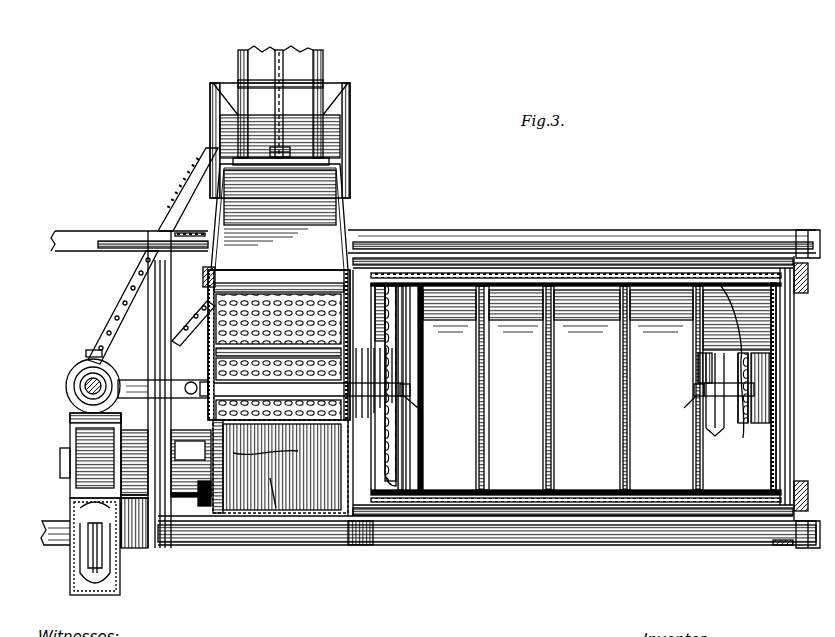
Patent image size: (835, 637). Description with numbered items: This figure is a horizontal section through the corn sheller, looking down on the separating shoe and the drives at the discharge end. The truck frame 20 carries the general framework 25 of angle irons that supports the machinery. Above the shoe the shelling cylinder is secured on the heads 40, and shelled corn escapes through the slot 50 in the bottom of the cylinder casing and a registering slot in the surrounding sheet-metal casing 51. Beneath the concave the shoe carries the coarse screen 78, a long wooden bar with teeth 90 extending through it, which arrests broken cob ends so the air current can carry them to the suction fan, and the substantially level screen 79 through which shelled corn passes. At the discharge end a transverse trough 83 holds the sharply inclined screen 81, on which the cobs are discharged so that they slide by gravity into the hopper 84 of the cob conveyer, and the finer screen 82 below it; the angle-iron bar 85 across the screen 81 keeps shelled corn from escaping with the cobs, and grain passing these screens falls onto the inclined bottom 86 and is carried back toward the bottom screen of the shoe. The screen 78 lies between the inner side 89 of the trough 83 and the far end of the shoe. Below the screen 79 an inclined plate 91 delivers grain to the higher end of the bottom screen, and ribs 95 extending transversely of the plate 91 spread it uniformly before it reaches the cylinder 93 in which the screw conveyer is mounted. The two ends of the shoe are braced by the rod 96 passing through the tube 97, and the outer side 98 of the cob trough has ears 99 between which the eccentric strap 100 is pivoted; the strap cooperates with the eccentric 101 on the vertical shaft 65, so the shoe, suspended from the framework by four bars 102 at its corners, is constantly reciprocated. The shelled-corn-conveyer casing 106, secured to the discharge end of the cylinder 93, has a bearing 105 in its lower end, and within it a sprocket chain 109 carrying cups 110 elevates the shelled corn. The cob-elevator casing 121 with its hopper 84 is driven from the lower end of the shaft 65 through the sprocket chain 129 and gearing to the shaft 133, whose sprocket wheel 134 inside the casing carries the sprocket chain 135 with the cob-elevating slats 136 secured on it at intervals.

The truck frame 20 is at (505, 236).
The general framework 25 is at (170, 224).
The heads 40 is at (700, 424).
The slot 50 is at (362, 338).
The sheet-metal casing 51 is at (747, 292).
The vertical shaft 65 is at (80, 372).
The screen 78 is at (398, 390).
The screen 79 is at (388, 452).
The screen 81 is at (262, 300).
The screen 82 is at (205, 340).
The transverse trough 83 is at (310, 190).
The hopper 84 is at (334, 100).
The bar 85 is at (300, 280).
The inclined bottom 86 is at (268, 500).
The inner side 89 is at (338, 472).
The teeth 90 is at (375, 370).
The inclined plate 91 is at (580, 470).
The cylinder 93 is at (192, 490).
The ribs 95 is at (540, 384).
The rod 96 is at (402, 380).
The tube 97 is at (292, 443).
The outer side 98 is at (205, 408).
The ears 99 is at (182, 373).
The eccentric strap 100 is at (130, 372).
The eccentric 101 is at (72, 384).
The bars 102 is at (207, 268).
The bearing 105 is at (56, 445).
The shelled-corn-conveyer casing 106 is at (112, 548).
The sprocket chain 109 is at (100, 558).
The cups 110 is at (66, 505).
The cob-elevator casing 121 is at (315, 54).
The sprocket chain 129 is at (118, 290).
The shaft 133 is at (300, 150).
The sprocket wheel 134 is at (282, 142).
The sprocket chain 135 is at (278, 92).
The cob-elevating slats 136 is at (250, 70).